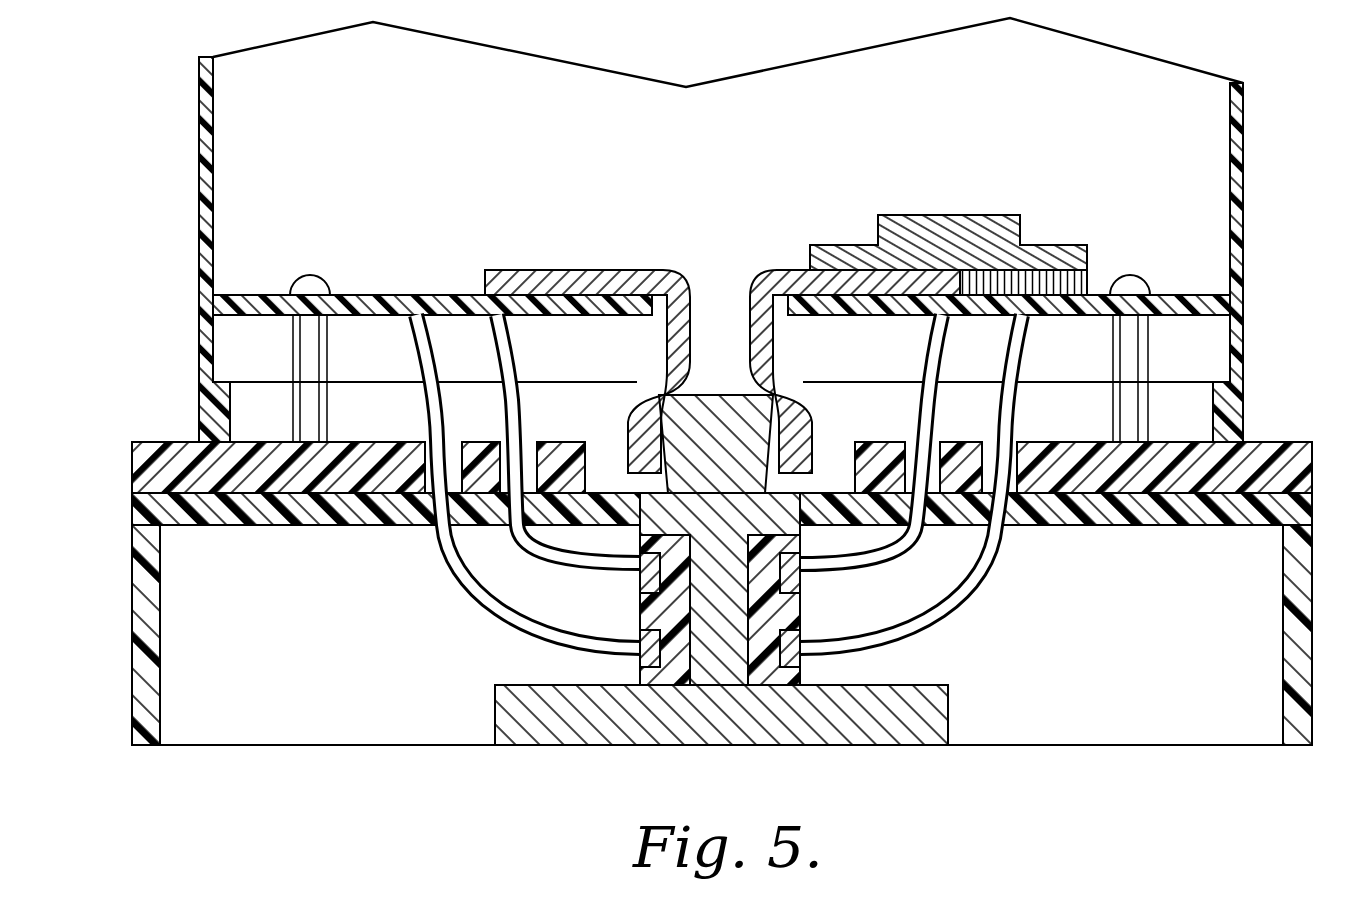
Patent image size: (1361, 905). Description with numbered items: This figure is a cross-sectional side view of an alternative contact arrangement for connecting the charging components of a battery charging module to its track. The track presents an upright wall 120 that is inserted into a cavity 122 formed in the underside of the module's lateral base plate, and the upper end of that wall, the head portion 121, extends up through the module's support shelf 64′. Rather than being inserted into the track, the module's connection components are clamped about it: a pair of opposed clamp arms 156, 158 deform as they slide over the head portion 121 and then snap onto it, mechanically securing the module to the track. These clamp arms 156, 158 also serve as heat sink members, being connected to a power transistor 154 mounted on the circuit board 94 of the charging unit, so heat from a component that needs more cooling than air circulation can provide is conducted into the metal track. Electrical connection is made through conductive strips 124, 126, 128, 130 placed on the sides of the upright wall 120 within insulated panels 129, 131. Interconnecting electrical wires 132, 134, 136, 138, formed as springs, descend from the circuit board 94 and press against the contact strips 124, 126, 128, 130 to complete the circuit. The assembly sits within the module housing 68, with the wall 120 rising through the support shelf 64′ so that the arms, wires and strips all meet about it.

The housing 68 is at (1245, 157).
The circuit board 94 is at (258, 294).
The power transistor 154 is at (1023, 230).
The clamp arm 156 is at (605, 268).
The clamp arm 158 is at (756, 298).
The head portion 121 is at (722, 398).
The upright wall 120 is at (738, 603).
The support shelf 64′ is at (1285, 442).
The cavity 122 is at (162, 652).
The interconnecting electrical wire 132 is at (527, 537).
The interconnecting electrical wire 134 is at (485, 597).
The interconnecting electrical wire 136 is at (890, 553).
The interconnecting electrical wire 138 is at (978, 585).
The conductive strip 124 is at (622, 566).
The conductive strip 126 is at (660, 646).
The conductive strip 128 is at (803, 560).
The conductive strip 130 is at (800, 657).
The insulated panel 129 is at (672, 688).
The insulated panel 131 is at (757, 688).